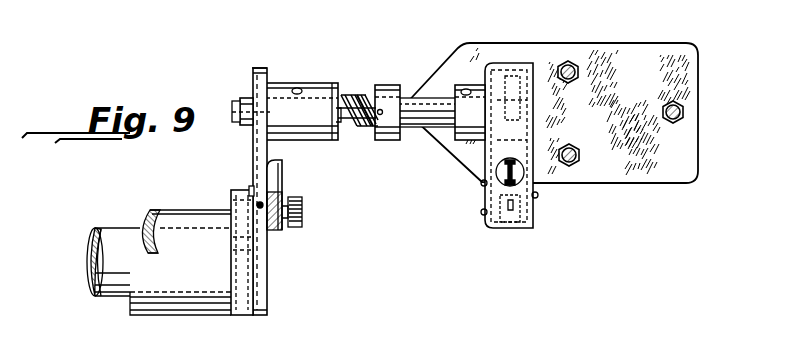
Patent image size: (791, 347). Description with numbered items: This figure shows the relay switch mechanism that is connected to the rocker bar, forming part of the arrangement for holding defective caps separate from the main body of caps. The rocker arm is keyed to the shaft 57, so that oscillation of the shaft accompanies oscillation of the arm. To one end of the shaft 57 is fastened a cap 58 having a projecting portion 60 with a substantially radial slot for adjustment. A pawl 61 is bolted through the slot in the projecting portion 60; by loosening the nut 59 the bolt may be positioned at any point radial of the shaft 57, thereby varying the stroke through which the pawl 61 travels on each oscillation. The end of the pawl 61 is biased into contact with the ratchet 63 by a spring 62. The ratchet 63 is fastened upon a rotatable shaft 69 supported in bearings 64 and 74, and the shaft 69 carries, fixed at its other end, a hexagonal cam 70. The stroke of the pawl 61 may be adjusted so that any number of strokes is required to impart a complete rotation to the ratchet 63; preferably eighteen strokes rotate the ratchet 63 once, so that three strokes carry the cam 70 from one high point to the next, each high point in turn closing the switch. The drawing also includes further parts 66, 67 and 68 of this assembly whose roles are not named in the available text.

The shaft 57 is at (105, 272).
The cap 58 is at (253, 285).
The nut 59 is at (233, 202).
The projecting portion 60 is at (250, 190).
The pawl 61 is at (252, 145).
The spring 62 is at (282, 182).
The ratchet 63 is at (260, 71).
The bearing 64 is at (320, 97).
The spring coil 66 is at (360, 95).
The spring 67 is at (338, 85).
The collar 68 is at (392, 87).
The rotatable shaft 69 is at (417, 98).
The hexagonal cam 70 is at (512, 78).
The bearing 74 is at (473, 110).